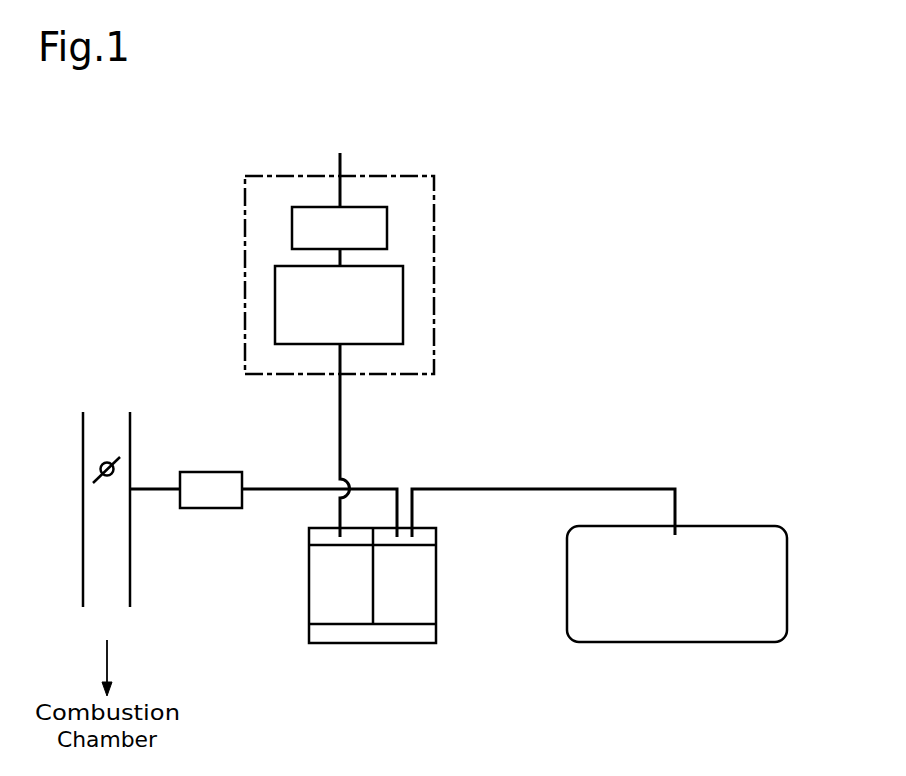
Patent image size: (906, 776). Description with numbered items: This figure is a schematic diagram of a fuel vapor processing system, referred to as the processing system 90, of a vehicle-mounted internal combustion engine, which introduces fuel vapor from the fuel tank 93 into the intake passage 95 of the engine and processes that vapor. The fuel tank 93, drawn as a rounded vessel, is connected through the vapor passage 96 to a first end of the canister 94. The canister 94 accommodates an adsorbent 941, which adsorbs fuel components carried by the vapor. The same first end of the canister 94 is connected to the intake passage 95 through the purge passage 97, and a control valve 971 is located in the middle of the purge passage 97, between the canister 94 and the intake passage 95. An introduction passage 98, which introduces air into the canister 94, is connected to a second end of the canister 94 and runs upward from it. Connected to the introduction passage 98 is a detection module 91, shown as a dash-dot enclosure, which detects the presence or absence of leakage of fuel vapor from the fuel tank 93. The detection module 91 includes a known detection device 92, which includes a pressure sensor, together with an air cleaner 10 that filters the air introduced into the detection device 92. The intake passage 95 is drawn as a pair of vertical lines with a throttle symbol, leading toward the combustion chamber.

The processing system 90 is at (636, 226).
The detection module 91 is at (376, 176).
The air cleaner 10 is at (345, 207).
The detection device 92 is at (363, 266).
The introduction passage 98 is at (341, 423).
The purge passage 97 is at (292, 489).
The control valve 971 is at (213, 472).
The vapor passage 96 is at (543, 489).
The fuel tank 93 is at (737, 526).
The canister 94 is at (309, 634).
The adsorbent 941 is at (315, 606).
The intake passage 95 is at (83, 565).